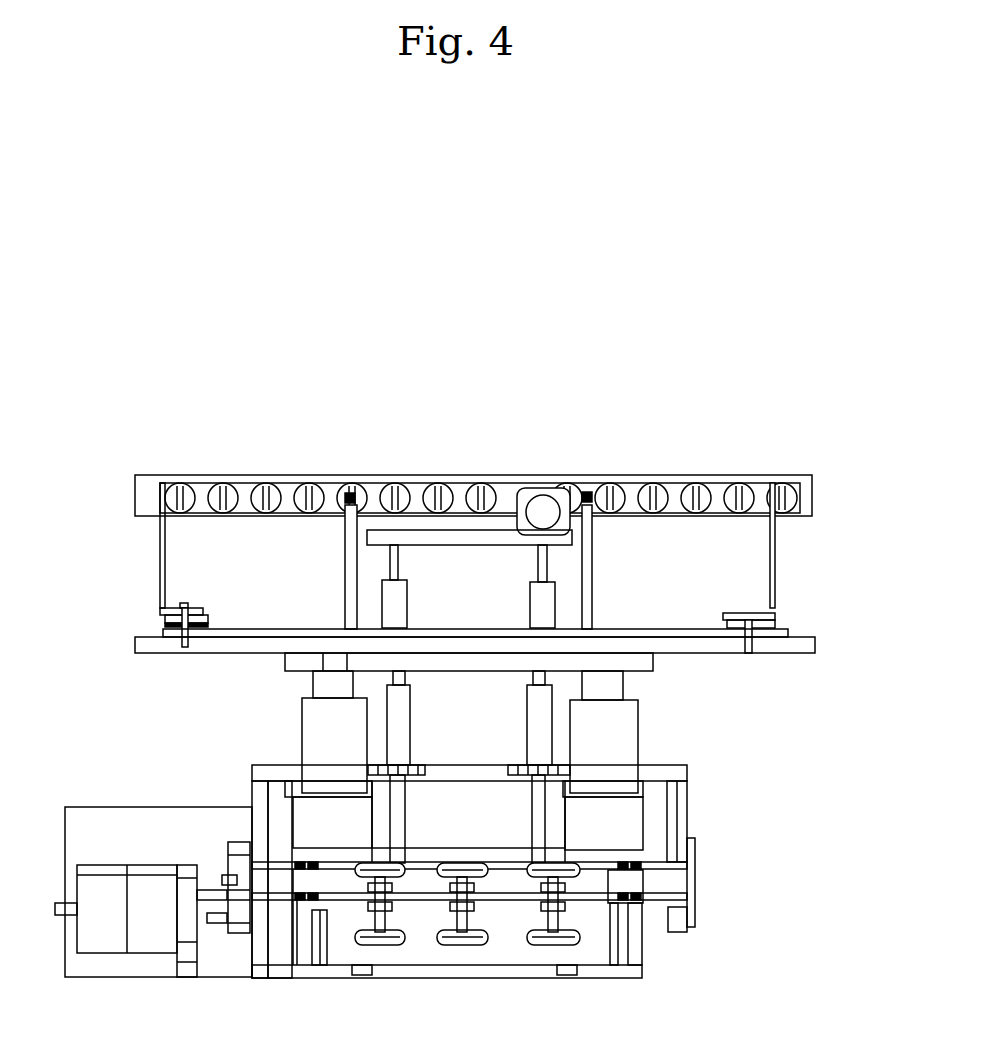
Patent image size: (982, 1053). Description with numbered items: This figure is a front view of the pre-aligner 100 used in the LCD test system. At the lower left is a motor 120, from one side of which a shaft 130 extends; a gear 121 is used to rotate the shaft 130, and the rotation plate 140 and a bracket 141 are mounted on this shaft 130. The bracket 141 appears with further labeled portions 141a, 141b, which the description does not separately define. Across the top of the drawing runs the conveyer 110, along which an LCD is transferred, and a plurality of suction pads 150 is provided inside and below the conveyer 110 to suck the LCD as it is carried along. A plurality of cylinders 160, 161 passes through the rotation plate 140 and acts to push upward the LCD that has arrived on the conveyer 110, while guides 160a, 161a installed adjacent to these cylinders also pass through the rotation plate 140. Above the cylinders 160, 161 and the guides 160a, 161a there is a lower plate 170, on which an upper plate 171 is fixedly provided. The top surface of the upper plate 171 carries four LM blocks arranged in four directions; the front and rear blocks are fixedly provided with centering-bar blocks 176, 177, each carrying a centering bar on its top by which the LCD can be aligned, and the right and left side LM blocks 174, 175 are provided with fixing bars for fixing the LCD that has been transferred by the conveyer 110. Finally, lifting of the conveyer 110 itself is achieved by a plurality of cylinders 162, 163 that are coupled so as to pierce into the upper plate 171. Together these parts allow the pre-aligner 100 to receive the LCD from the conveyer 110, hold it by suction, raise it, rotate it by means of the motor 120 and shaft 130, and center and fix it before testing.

The pre-aligner 100 is at (98, 669).
The conveyer 110 is at (340, 493).
The motor 120 is at (103, 952).
The gear 121 is at (230, 935).
The shaft 130 is at (677, 884).
The rotation plate 140 is at (680, 818).
The bracket 141 is at (635, 957).
The support column 141a is at (298, 950).
The support column 141b is at (278, 965).
The suction pad 150 is at (585, 492).
The cylinder 160 is at (315, 722).
The guide 160a is at (400, 718).
The cylinder 161 is at (628, 743).
The guide 161a is at (540, 742).
The cylinder 162 is at (392, 605).
The cylinder 163 is at (543, 605).
The lower plate 170 is at (645, 663).
The upper plate 171 is at (800, 648).
The right side LM block 174 is at (163, 618).
The left side LM block 175 is at (770, 633).
The centering-bar block 176 is at (160, 558).
The centering-bar block 177 is at (762, 613).